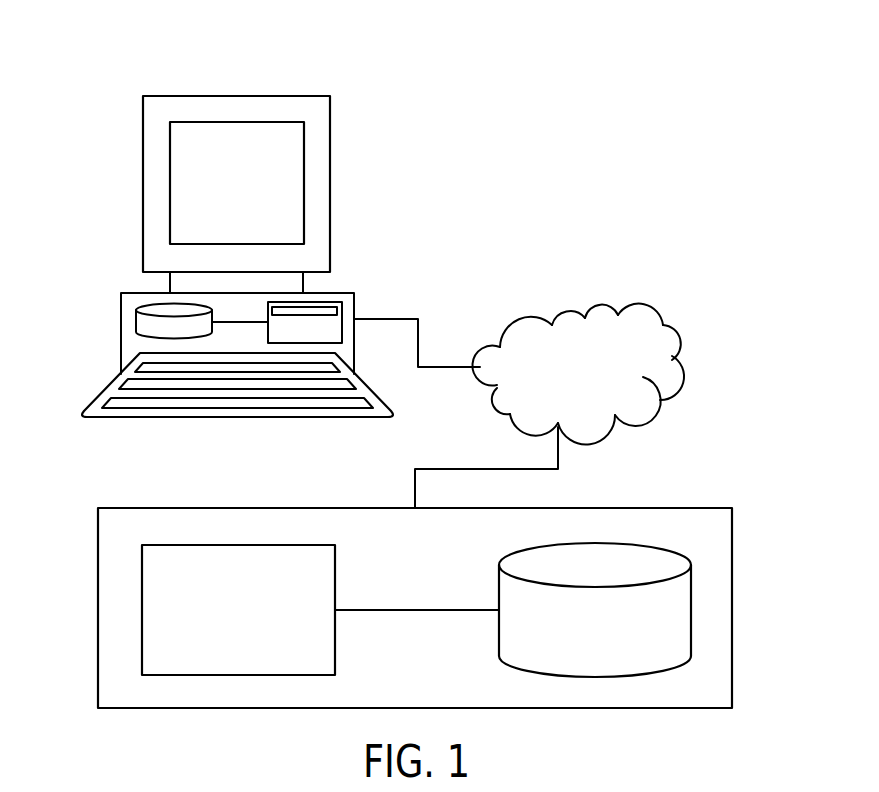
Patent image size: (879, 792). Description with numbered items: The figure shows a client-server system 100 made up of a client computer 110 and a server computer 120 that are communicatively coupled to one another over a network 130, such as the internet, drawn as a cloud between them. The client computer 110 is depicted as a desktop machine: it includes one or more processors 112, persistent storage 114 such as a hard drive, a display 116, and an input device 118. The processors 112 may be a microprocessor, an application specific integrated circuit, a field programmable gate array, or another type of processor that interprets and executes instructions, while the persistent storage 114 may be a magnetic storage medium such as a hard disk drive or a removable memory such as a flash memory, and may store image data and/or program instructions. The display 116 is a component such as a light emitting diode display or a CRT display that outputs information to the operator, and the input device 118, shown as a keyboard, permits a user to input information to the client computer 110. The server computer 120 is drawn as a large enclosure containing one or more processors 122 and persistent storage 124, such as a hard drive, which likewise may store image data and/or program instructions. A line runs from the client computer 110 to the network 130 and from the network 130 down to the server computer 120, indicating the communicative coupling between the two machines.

The client-server system 100 is at (468, 48).
The client computer 110 is at (331, 166).
The processors 112 is at (342, 305).
The persistent storage 114 is at (134, 317).
The display 116 is at (304, 215).
The input device 118 is at (117, 377).
The server computer 120 is at (733, 537).
The processors 122 is at (337, 553).
The persistent storage 124 is at (498, 598).
The network 130 is at (601, 303).